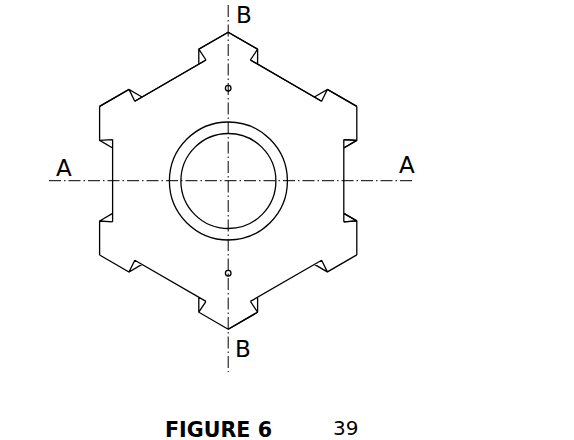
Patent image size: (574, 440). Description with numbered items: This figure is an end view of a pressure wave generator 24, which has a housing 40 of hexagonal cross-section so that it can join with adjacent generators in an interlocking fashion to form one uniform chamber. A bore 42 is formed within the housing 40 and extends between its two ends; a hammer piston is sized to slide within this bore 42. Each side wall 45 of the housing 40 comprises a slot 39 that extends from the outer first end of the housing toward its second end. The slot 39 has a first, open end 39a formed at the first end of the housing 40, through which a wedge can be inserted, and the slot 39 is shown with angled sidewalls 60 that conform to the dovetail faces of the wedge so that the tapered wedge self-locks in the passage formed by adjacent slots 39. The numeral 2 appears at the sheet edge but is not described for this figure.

The pressure wave generator 24 is at (391, 65).
The slot 39 is at (155, 82).
The housing 40 is at (270, 101).
The bore 42 is at (249, 163).
The side wall 45 is at (252, 322).
The angled sidewalls 60 is at (345, 145).
The assembly 2 is at (503, 427).
The first (open) end of the slot 39a is at (426, 434).